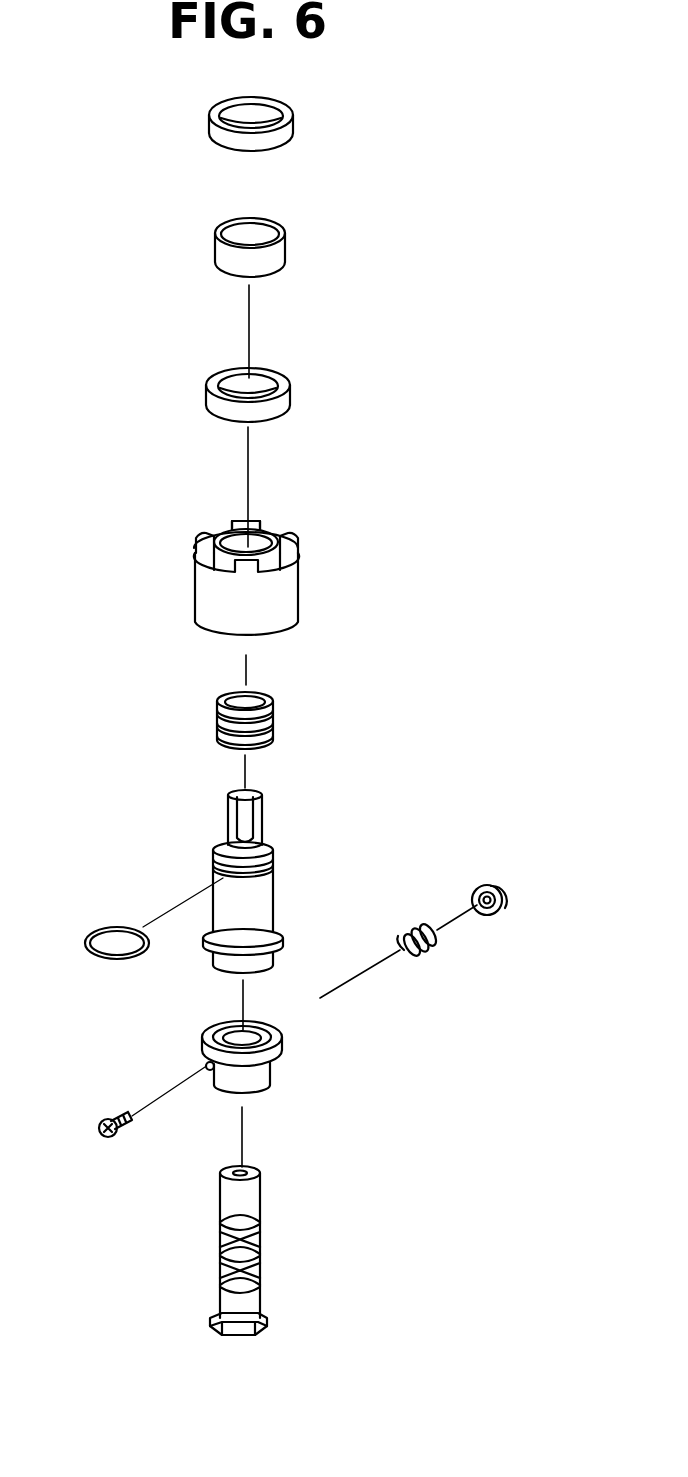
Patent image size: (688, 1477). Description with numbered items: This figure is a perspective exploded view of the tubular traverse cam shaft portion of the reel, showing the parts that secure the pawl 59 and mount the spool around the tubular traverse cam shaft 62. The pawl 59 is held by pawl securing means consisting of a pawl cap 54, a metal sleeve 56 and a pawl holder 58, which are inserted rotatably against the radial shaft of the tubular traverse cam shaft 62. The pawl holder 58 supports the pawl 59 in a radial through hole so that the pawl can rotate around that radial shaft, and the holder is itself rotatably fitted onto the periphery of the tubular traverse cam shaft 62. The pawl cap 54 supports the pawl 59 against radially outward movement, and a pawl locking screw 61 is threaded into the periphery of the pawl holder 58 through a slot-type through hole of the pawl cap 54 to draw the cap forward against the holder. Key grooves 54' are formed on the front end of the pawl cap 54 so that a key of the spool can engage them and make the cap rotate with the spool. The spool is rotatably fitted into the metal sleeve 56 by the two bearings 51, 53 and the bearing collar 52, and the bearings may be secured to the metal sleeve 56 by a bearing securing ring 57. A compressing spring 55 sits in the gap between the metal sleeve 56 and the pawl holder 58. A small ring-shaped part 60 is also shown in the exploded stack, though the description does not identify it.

The bearing 51 is at (293, 128).
The bearing collar 52 is at (290, 250).
The bearing 53 is at (293, 393).
The pawl cap 54 is at (299, 578).
The key groove 54' is at (322, 511).
The compressing spring 55 is at (277, 720).
The metal sleeve 56 is at (417, 960).
The bearing securing ring 57 is at (108, 927).
The pawl holder 58 is at (273, 1068).
The pawl 59 is at (275, 890).
The bushing 60 is at (502, 915).
The pawl locking screw 61 is at (107, 1140).
The tubular traverse cam shaft 62 is at (268, 1238).